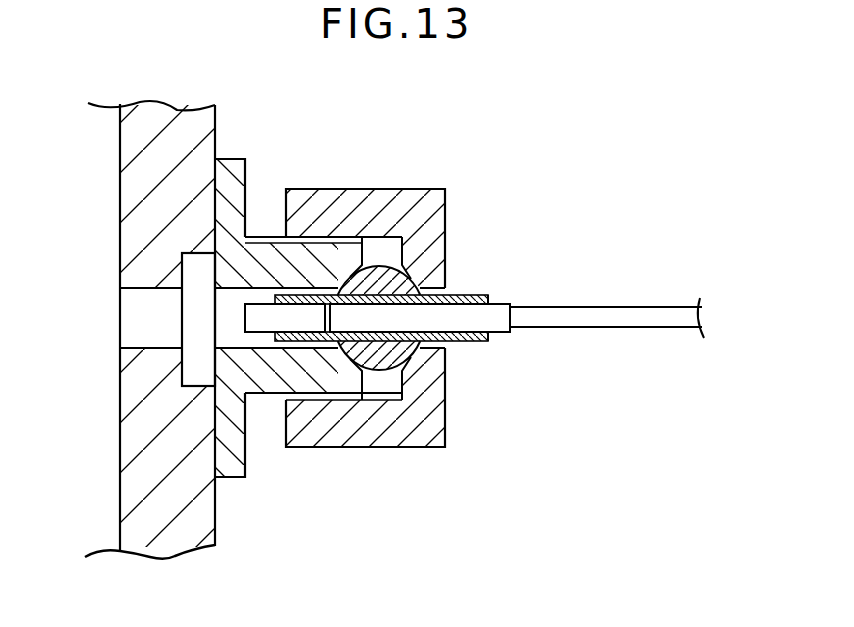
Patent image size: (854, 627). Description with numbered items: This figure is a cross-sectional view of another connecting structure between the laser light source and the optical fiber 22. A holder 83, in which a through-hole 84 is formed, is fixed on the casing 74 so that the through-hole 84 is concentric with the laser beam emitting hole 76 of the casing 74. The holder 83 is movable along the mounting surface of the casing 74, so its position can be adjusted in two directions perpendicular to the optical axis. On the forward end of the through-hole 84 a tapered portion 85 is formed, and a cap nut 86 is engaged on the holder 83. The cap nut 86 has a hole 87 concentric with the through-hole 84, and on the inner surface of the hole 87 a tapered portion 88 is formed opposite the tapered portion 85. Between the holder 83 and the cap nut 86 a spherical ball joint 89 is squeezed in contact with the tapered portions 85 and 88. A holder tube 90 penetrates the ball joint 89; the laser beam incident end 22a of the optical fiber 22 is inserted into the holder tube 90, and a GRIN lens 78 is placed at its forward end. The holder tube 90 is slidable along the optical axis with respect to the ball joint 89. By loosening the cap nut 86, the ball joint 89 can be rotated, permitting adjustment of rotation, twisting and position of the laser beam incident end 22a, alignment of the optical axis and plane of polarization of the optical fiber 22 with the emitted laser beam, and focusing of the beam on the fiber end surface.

The casing 74 is at (203, 125).
The laser beam emitting hole 76 is at (163, 330).
The GRIN lens 78 is at (258, 321).
The holder 83 is at (247, 180).
The through-hole 84 is at (262, 341).
The tapered portion 85 is at (445, 287).
The cap nut 86 is at (416, 189).
The hole 87 is at (445, 291).
The tapered portion 88 is at (377, 368).
The spherical ball joint 89 is at (362, 348).
The holder tube 90 is at (480, 338).
The optical fiber 22 is at (623, 307).
The laser beam incident end 22a is at (463, 315).